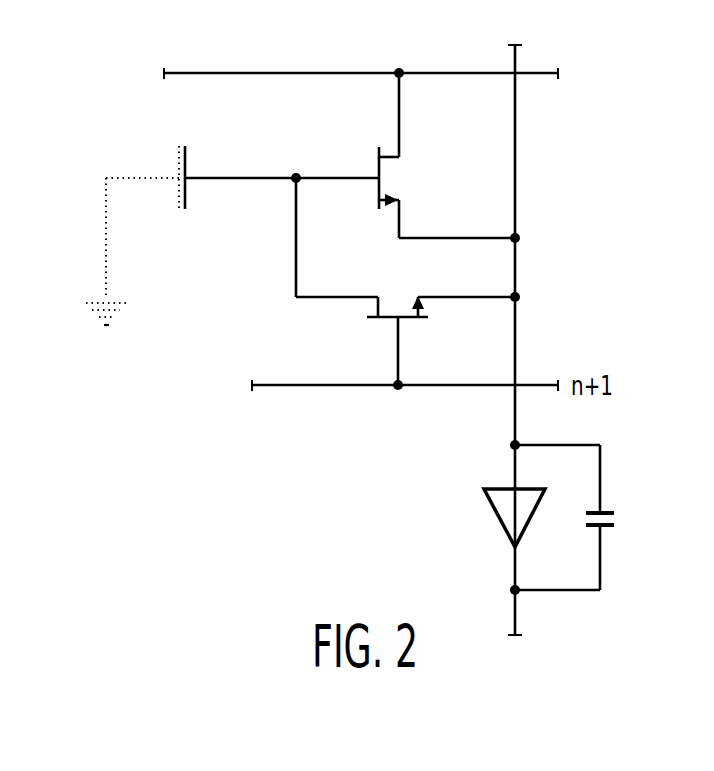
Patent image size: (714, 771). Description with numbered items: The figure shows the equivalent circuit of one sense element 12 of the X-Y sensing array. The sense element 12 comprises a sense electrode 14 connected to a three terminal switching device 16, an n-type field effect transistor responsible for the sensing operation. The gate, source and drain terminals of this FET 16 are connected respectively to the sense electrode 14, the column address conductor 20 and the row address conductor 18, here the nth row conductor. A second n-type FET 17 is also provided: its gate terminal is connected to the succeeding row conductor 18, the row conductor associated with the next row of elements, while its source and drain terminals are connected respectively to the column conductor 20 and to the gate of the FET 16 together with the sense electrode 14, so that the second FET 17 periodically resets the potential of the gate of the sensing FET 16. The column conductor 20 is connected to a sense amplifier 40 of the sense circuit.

The sense element 12 is at (100, 98).
The sense electrode 14 is at (186, 202).
The three terminal switching device 16 is at (378, 158).
The second n-type FET 17 is at (419, 319).
The row address conductor 18 is at (242, 75).
The column address conductor 20 is at (517, 158).
The sense amplifier 40 is at (492, 519).